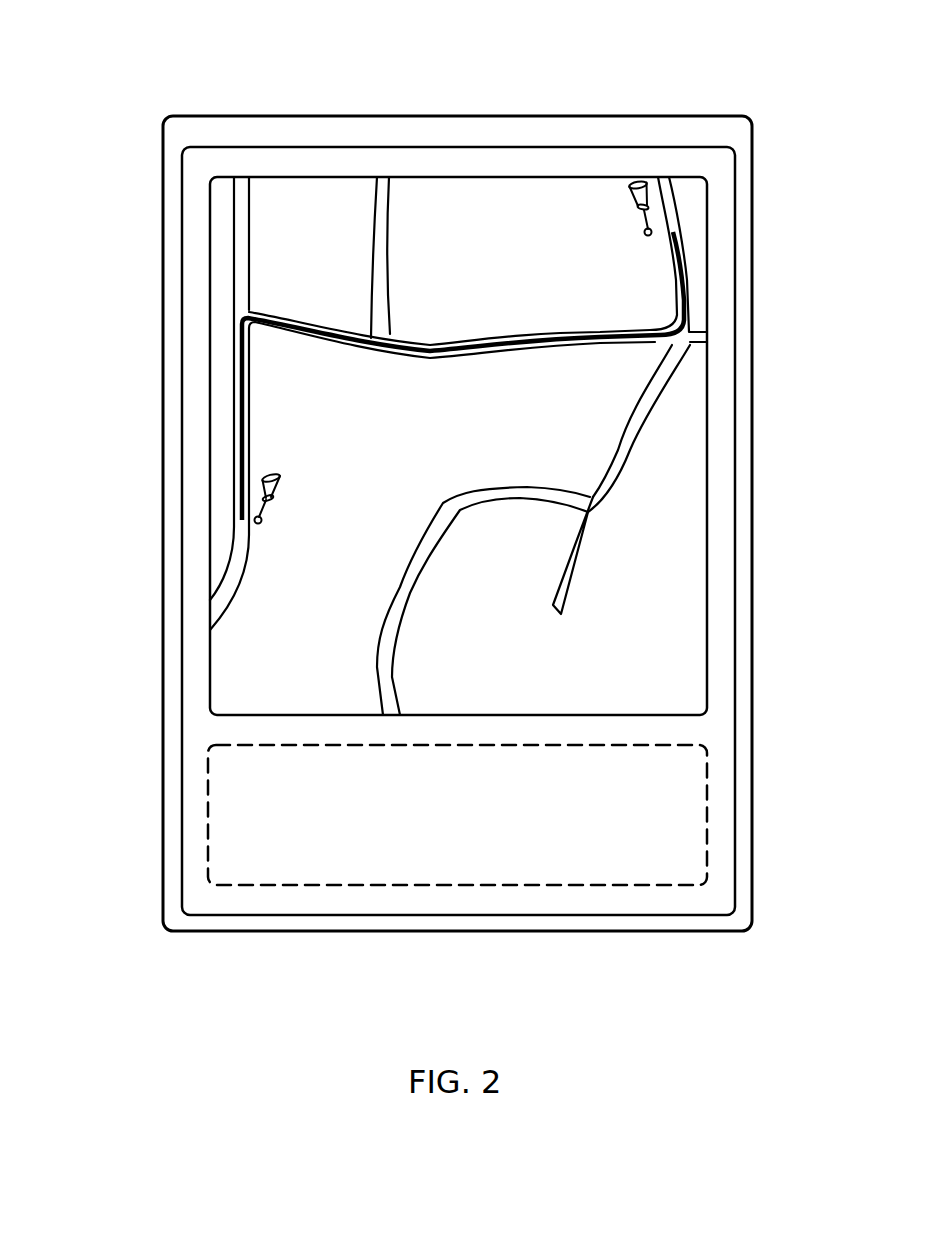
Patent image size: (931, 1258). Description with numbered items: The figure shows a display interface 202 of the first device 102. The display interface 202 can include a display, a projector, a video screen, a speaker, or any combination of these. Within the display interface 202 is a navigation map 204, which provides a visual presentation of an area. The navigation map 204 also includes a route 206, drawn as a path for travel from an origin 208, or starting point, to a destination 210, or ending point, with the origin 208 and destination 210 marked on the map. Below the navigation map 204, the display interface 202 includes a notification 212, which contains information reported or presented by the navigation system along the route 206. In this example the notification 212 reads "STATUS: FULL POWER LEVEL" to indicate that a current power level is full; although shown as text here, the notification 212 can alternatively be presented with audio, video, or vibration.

The first device 102 is at (168, 44).
The display interface 202 is at (733, 957).
The navigation map 204 is at (781, 177).
The route 206 is at (222, 348).
The origin 208 is at (254, 520).
The destination 210 is at (645, 230).
The notification 212 is at (146, 745).